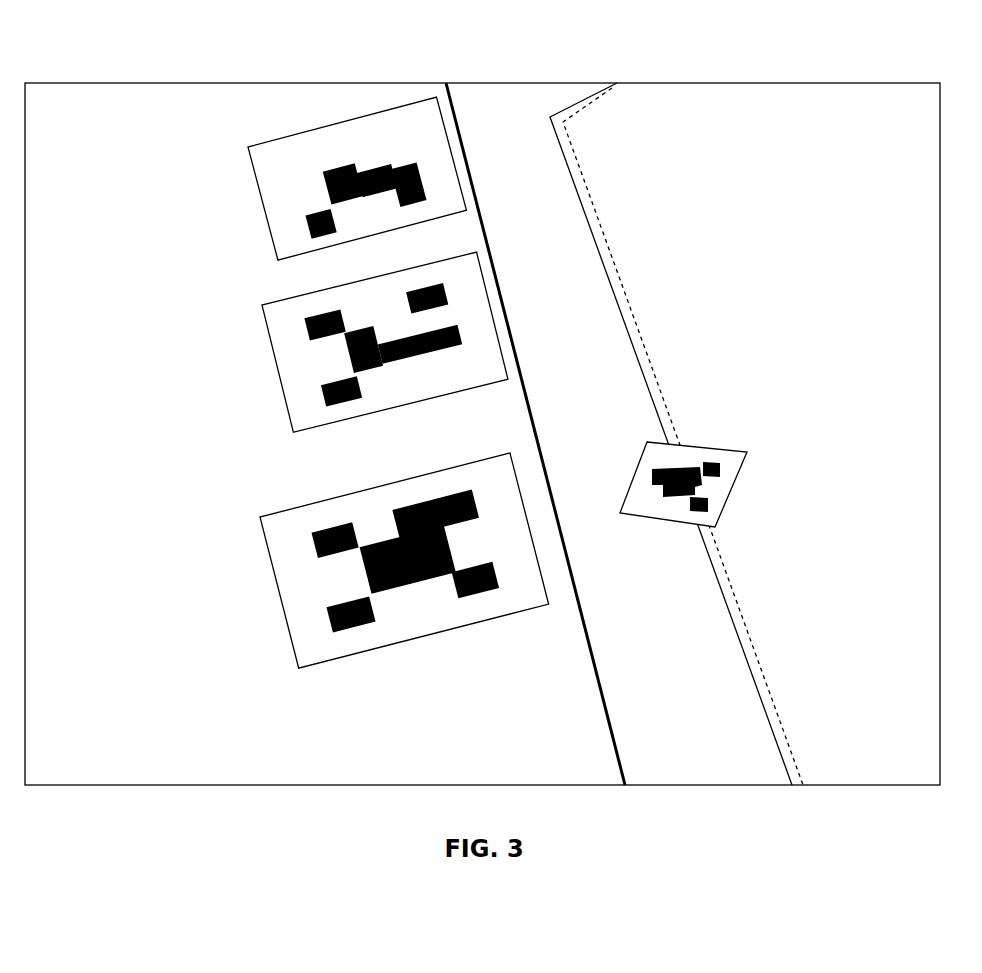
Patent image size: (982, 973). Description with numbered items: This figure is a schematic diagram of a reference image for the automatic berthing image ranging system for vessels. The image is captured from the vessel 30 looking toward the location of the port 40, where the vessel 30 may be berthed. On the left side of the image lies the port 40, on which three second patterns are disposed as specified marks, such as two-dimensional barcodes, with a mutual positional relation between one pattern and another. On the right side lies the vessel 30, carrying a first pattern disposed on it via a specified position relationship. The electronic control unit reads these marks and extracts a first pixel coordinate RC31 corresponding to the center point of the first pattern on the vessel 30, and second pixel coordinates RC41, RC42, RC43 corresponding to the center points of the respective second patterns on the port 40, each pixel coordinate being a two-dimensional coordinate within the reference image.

The port 40 is at (117, 366).
The vessel 30 is at (838, 348).
The second pixel coordinate RC43 is at (340, 183).
The second pixel coordinate RC42 is at (375, 350).
The second pixel coordinate RC41 is at (423, 553).
The first pixel coordinate RC31 is at (681, 478).